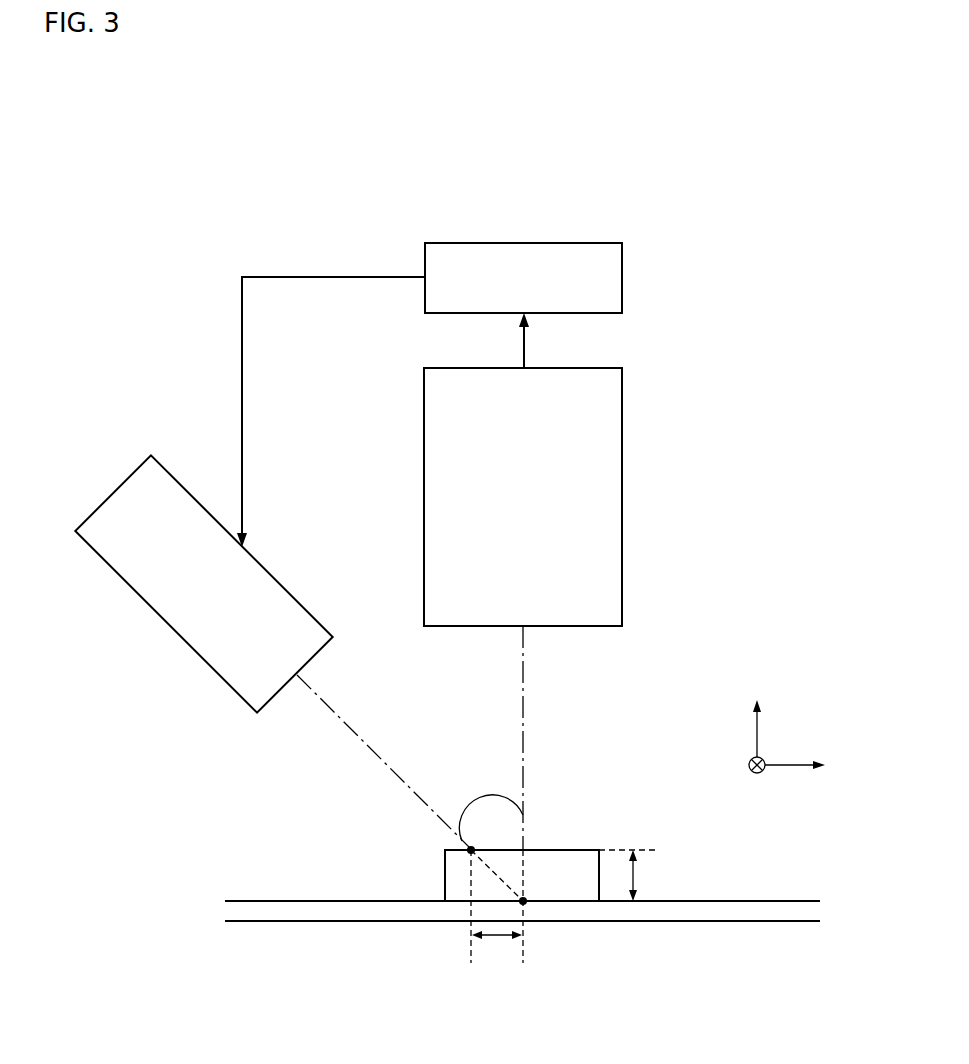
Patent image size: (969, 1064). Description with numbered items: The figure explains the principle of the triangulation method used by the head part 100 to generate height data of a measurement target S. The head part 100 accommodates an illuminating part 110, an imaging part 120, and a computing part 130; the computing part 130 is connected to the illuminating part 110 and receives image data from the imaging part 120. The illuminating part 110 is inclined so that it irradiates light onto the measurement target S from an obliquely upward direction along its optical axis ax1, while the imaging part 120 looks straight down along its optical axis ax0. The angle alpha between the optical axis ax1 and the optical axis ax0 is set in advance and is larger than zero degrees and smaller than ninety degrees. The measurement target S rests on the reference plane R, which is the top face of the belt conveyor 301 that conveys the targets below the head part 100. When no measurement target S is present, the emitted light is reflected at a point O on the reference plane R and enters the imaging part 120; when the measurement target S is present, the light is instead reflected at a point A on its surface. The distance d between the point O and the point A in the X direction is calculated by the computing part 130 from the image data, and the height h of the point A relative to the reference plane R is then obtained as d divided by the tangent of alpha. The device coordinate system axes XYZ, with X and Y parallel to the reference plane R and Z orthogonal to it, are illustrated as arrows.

The head part 100 is at (143, 108).
The illuminating part 110 is at (113, 492).
The imaging part 120 is at (508, 368).
The computing part 130 is at (525, 243).
The belt conveyor 301 is at (294, 910).
The measurement target S is at (577, 850).
The point on the measurement target surface A is at (421, 904).
The point on the reference plane O is at (548, 904).
The reference plane R is at (537, 910).
The optical axis of the imaging part optical system ax0 is at (523, 738).
The optical axis of the illuminating part optical system ax1 is at (378, 758).
The angle between optical axes alpha is at (491, 808).
The height of point A h is at (629, 875).
The distance between point O and point A d is at (497, 954).
The device coordinate system axes XYZ is at (785, 739).